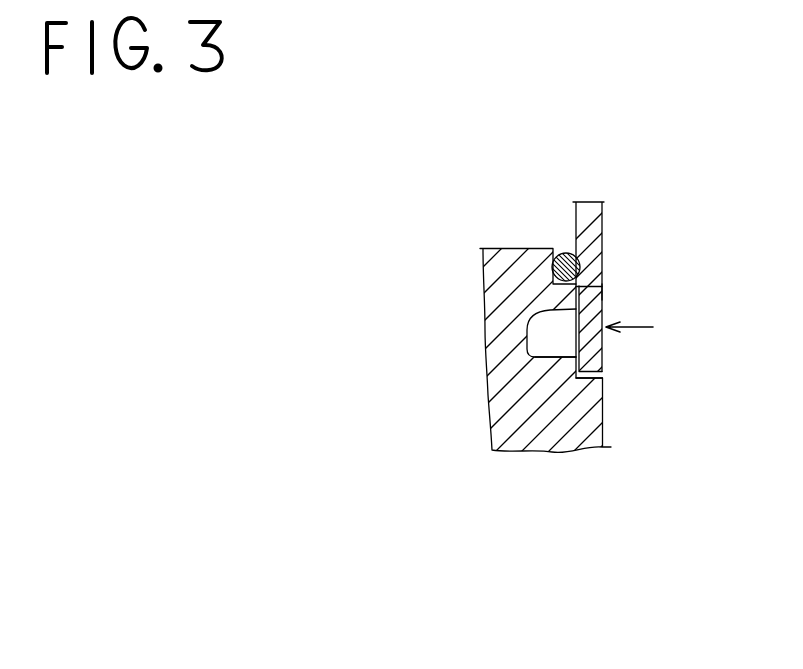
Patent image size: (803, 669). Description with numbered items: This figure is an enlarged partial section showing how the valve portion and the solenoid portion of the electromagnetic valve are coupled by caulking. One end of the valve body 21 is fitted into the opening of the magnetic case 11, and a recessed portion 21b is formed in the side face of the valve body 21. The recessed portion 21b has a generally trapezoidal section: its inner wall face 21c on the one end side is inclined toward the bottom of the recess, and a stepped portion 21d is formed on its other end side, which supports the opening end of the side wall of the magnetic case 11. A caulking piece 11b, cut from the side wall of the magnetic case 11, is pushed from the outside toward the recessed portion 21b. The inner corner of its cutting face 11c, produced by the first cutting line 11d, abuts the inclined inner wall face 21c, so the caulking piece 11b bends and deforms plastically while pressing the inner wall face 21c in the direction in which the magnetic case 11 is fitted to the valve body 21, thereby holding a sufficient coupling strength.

The magnetic case 11 is at (603, 217).
The caulking piece 11b is at (603, 341).
The cutting face 11c is at (588, 285).
The first cutting line 11d is at (603, 286).
The valve body 21 is at (602, 438).
The recessed portion 21b is at (553, 342).
The inner wall face 21c is at (550, 311).
The stepped portion 21d is at (604, 380).